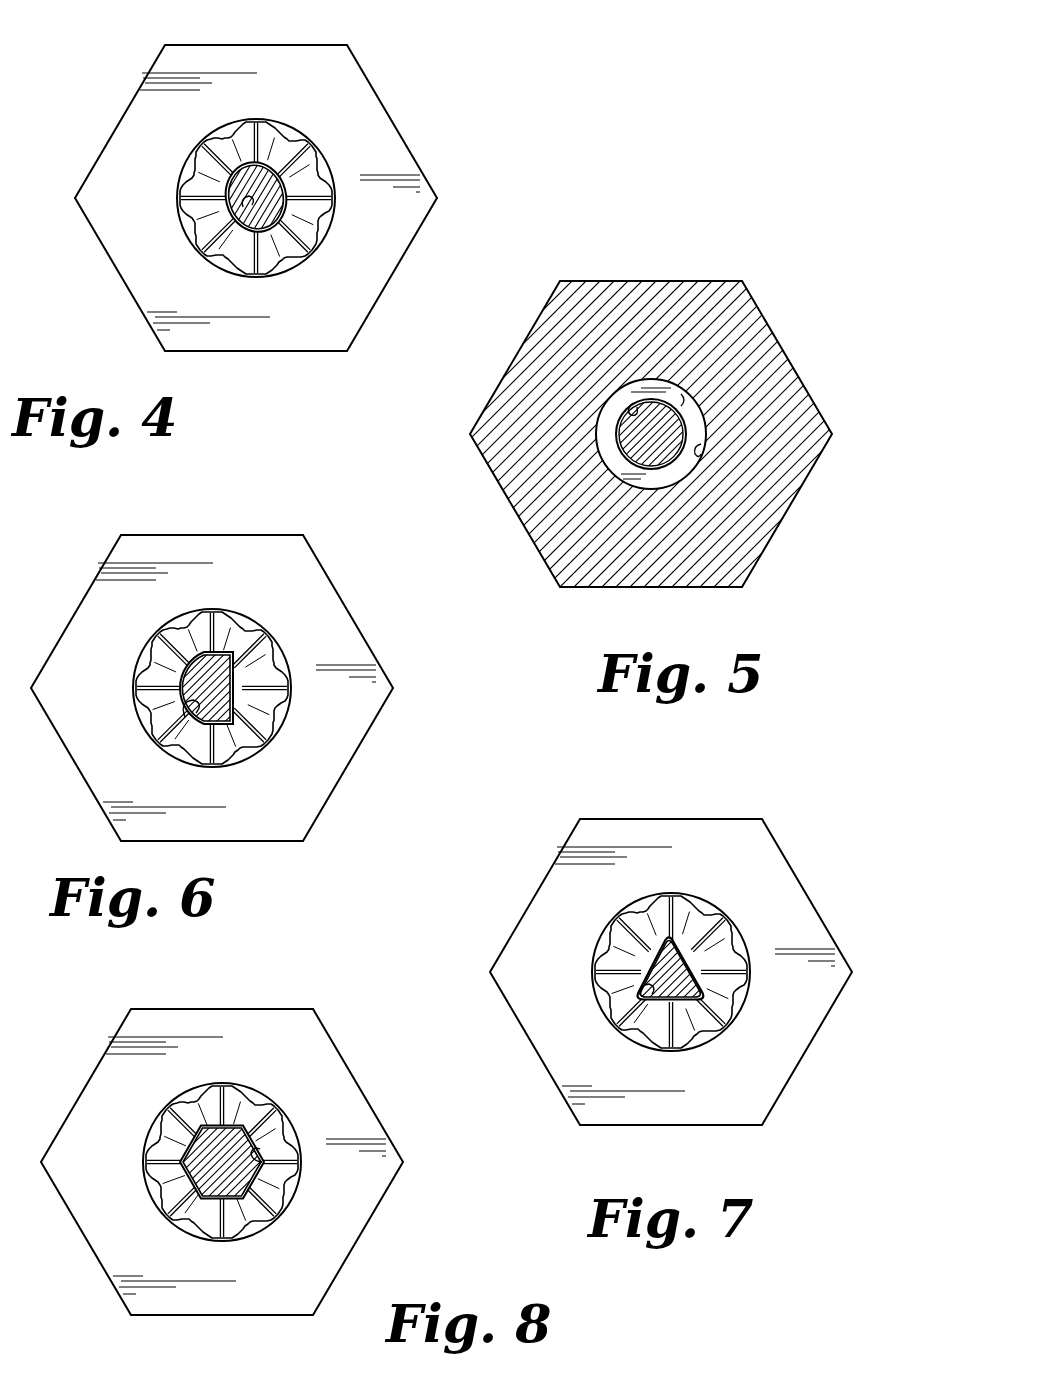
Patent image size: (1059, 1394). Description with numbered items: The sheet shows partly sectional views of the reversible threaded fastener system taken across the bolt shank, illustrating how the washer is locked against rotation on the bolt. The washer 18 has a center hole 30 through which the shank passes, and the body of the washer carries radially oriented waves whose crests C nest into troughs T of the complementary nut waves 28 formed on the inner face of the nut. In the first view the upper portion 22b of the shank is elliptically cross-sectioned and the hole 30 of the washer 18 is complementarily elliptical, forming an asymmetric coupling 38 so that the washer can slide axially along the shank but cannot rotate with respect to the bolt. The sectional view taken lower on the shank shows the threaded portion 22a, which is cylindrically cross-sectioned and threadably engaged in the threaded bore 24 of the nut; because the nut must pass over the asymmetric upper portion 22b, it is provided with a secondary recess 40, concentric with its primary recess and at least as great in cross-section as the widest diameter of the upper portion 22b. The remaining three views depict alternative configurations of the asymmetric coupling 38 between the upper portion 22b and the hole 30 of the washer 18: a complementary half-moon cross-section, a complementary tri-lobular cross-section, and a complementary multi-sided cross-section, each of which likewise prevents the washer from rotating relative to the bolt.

In FIG. 4, the washer 18 is at (403, 137).
In FIG. 5, the washer 18 is at (688, 393).
In FIG. 6, the washer 18 is at (363, 635).
In FIG. 7, the washer 18 is at (718, 818).
In FIG. 8, the washer 18 is at (323, 1025).
In FIG. 5, the threaded portion 22a is at (651, 434).
In FIG. 4, the upper portion 22b is at (291, 211).
In FIG. 6, the upper portion 22b is at (215, 733).
In FIG. 7, the upper portion 22b is at (640, 963).
In FIG. 8, the upper portion 22b is at (210, 1127).
In FIG. 5, the threaded bore 24 is at (633, 403).
In FIG. 4, the nut waves 28 is at (307, 163).
In FIG. 4, the center hole 30 is at (243, 207).
In FIG. 6, the center hole 30 is at (185, 717).
In FIG. 7, the center hole 30 is at (640, 995).
In FIG. 8, the center hole 30 is at (262, 1162).
In FIG. 4, the asymmetric coupling 38 is at (226, 190).
In FIG. 6, the asymmetric coupling 38 is at (240, 680).
In FIG. 7, the asymmetric coupling 38 is at (700, 963).
In FIG. 8, the asymmetric coupling 38 is at (260, 1137).
In FIG. 5, the secondary recess 40 is at (700, 447).
In FIG. 4, the crests C is at (257, 120).
In FIG. 4, the troughs T is at (278, 140).